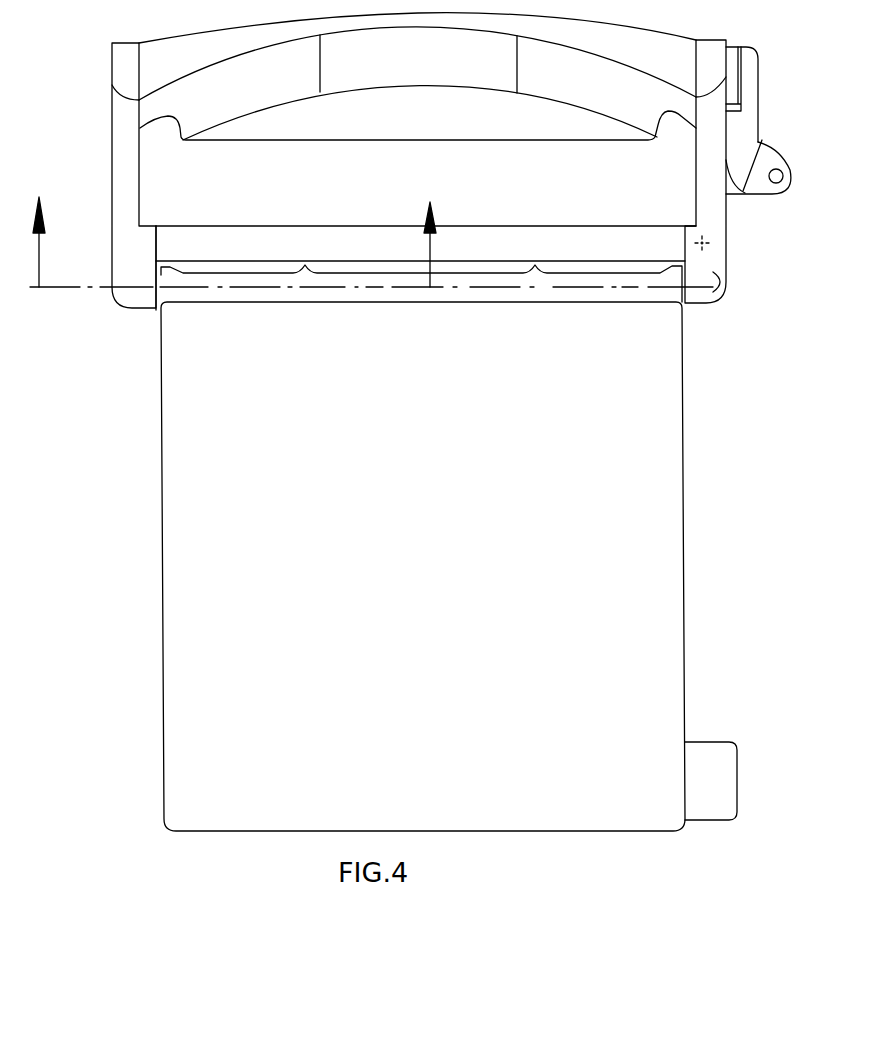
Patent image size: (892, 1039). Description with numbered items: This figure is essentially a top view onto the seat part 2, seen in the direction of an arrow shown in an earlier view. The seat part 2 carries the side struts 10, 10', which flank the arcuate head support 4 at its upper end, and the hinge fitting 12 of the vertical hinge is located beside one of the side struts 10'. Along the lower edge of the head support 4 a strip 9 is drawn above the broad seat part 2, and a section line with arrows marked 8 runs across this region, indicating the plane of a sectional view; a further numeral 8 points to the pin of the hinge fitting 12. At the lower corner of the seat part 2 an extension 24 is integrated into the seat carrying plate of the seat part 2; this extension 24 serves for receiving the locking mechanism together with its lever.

The seat part 2 is at (491, 665).
The head support 4 is at (457, 77).
The section line 8-8 / hinge pin 8 is at (780, 178).
The retaining strip 9 is at (598, 285).
The side strut 10 is at (384, 175).
The side strut 10' is at (727, 188).
The hinge fitting 12 is at (759, 163).
The extension 24 is at (712, 762).